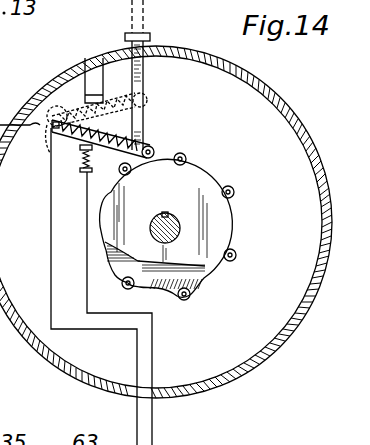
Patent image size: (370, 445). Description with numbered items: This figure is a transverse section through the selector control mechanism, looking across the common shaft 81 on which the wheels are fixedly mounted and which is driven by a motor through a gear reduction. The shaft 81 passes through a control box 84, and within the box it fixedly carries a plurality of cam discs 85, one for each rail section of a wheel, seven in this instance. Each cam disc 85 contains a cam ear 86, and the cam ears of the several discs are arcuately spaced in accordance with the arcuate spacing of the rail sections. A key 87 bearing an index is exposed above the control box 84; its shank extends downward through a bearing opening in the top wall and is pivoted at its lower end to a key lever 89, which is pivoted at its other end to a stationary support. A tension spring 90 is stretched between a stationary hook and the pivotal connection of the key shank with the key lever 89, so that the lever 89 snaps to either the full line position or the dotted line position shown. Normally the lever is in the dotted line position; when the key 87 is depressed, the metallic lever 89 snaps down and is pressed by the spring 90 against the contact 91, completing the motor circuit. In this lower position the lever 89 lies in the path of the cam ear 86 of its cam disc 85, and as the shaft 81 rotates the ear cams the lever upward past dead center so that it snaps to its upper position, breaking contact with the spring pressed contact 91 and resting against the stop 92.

The common shaft 81 is at (177, 230).
The control box 84 is at (282, 338).
The cam disc 85 is at (197, 182).
The cam ear 86 is at (186, 158).
The key 87 is at (164, 0).
The key lever 89 is at (40, 168).
The tension spring 90 is at (80, 147).
The contact 91 is at (51, 165).
The stop 92 is at (86, 91).